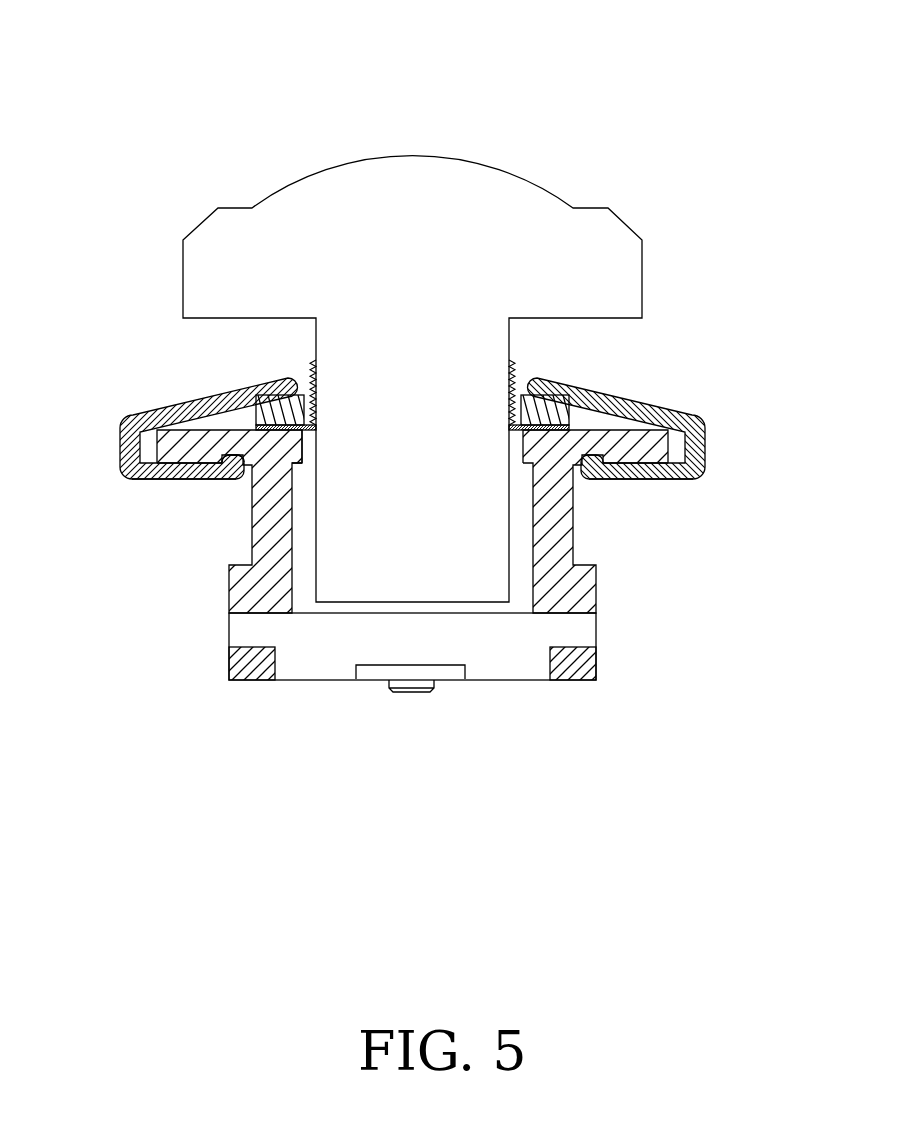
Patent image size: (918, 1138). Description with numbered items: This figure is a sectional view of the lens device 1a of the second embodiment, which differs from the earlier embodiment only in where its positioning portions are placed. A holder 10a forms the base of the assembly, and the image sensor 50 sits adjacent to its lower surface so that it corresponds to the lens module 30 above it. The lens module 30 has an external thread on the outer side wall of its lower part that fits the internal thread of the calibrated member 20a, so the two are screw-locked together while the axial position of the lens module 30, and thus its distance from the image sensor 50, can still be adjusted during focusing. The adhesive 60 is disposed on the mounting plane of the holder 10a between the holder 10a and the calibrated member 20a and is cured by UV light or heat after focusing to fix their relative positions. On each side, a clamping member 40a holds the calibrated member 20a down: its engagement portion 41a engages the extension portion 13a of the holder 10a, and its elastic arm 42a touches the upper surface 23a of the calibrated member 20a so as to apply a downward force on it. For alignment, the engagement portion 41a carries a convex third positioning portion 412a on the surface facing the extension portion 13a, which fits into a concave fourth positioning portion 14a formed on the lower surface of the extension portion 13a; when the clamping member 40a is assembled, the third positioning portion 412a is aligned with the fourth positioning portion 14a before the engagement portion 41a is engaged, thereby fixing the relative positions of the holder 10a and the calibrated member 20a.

The lens device 1a is at (157, 38).
The lens module 30 is at (227, 222).
The upper surface 23a is at (297, 396).
The calibrated member 20a is at (290, 405).
The adhesive 60 is at (512, 427).
The holder 10a is at (257, 540).
The extension portion 13a is at (189, 430).
The fourth positioning portion 14a is at (290, 444).
The clamping member 40a is at (132, 421).
The engagement portion 41a is at (122, 468).
The elastic arm 42a is at (643, 405).
The third positioning portion 412a is at (222, 472).
The image sensor 50 is at (375, 672).